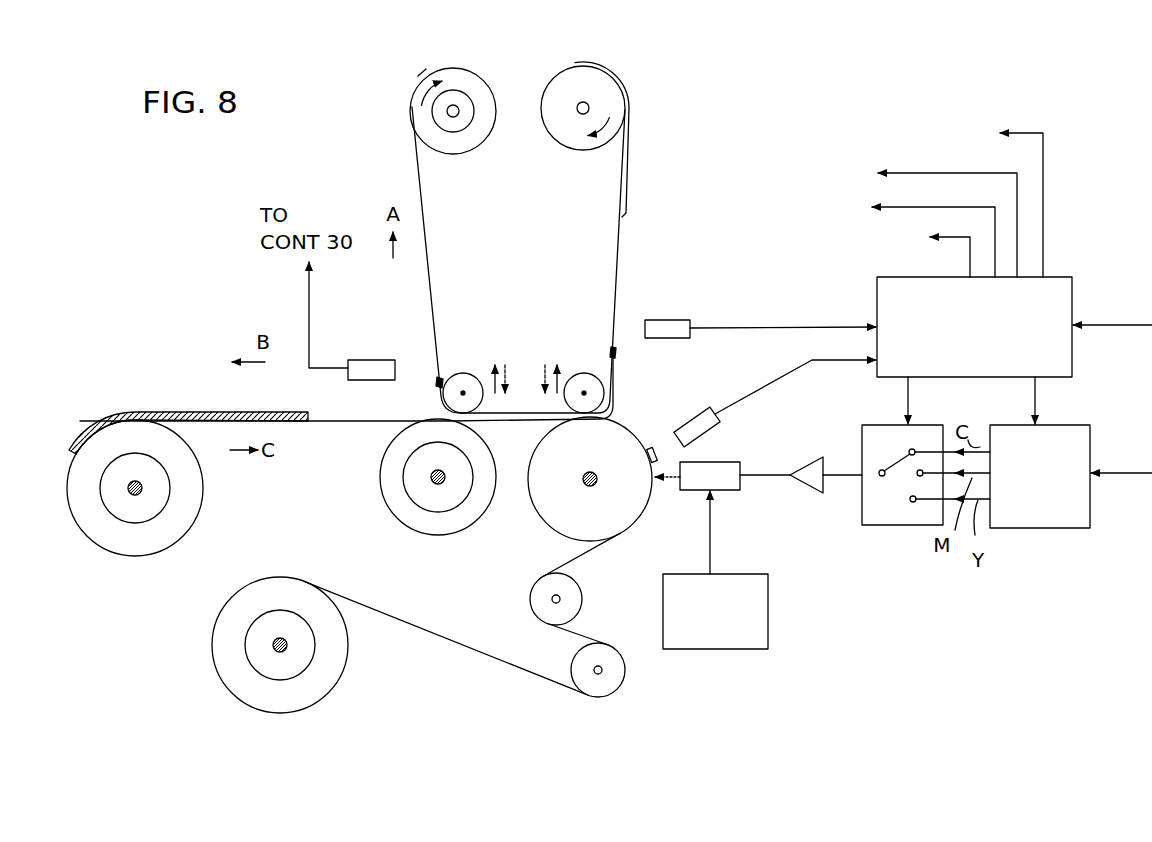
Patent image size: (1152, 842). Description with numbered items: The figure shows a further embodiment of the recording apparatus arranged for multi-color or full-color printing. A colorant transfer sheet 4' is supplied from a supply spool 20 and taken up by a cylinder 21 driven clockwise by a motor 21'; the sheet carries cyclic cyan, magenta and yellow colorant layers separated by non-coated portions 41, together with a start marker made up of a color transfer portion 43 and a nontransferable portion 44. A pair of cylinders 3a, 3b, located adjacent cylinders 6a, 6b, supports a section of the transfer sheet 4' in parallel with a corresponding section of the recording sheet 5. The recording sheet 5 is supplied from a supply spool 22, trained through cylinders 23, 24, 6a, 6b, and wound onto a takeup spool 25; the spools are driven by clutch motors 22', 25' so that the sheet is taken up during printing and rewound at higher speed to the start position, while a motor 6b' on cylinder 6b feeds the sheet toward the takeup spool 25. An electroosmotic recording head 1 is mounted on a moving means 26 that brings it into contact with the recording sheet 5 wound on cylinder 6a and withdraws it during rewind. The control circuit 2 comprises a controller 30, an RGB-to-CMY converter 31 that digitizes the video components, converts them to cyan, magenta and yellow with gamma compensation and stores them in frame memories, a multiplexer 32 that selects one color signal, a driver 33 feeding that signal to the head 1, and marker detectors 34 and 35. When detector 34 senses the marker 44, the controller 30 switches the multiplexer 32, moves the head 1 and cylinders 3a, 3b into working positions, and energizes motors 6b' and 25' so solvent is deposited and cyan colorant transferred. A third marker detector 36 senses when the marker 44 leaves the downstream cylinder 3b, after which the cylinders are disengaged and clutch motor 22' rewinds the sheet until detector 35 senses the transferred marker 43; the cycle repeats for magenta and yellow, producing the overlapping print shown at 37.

The recording head 1 is at (737, 462).
The control circuit 2 is at (967, 665).
The cylinder 3a is at (580, 372).
The cylinder 3b is at (462, 372).
The transfer sheet 4' is at (502, 260).
The recording sheet 5 is at (348, 422).
The cylinder 6a is at (545, 518).
The cylinder 6b is at (438, 493).
The motor 6b' is at (414, 495).
The supply spool 20 is at (580, 150).
The cylinder 21 is at (453, 140).
The motor 21' is at (479, 76).
The supply spool 22 is at (296, 645).
The clutch motor 22' is at (228, 673).
The cylinder 23 is at (620, 683).
The cylinder 24 is at (533, 603).
The takeup spool 25 is at (153, 488).
The clutch motor 25' is at (102, 534).
The moving means 26 is at (768, 640).
The controller 30 is at (1063, 276).
The RGB-to-CMY converter 31 is at (1090, 425).
The multiplexer 32 is at (895, 525).
The driver 33 is at (813, 493).
The marker detector 34 is at (683, 320).
The marker detector 35 is at (697, 410).
The marker detector 36 is at (363, 360).
The overlapping color print 37 is at (160, 410).
The non-coated portion 41 is at (617, 290).
The color transfer portion 43 is at (652, 445).
The nontransferable portion 44 is at (438, 380).